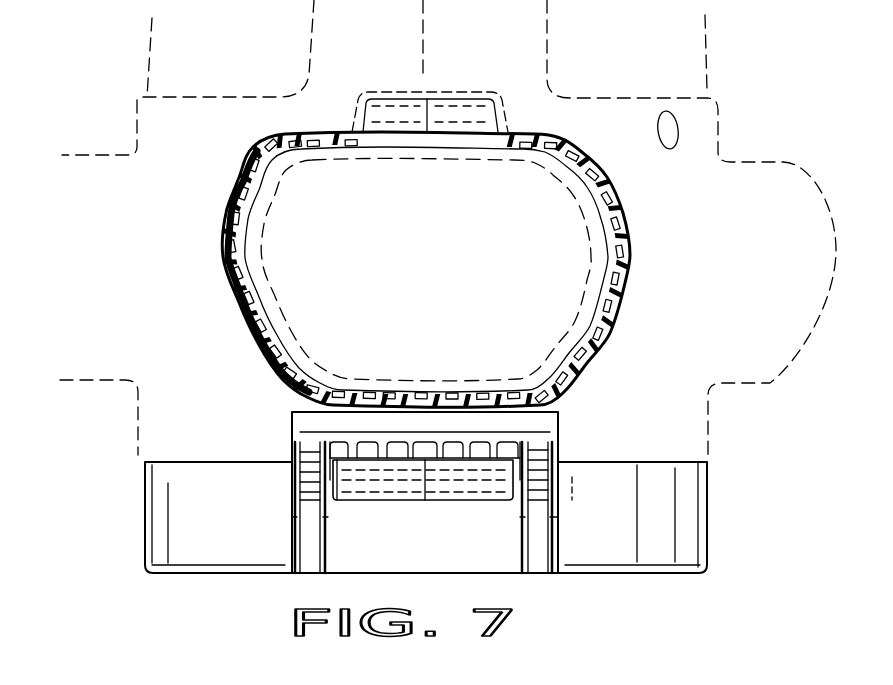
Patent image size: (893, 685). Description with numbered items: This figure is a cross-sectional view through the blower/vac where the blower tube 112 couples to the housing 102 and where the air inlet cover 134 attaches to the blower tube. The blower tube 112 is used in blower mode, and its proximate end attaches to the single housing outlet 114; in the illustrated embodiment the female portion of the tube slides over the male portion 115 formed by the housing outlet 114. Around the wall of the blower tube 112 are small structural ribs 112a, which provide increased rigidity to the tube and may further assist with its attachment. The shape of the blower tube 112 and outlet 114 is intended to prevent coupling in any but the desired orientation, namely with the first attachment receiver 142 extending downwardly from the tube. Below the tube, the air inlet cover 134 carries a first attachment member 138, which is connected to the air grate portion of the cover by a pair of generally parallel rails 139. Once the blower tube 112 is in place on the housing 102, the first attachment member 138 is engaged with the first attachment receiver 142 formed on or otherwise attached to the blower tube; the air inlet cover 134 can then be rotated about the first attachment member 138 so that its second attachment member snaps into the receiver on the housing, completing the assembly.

The housing 102 is at (767, 163).
The blower tube 112 is at (288, 223).
The structural ribs 112a is at (328, 146).
The housing outlet 114 is at (442, 282).
The male portion 115 is at (592, 218).
The air inlet cover 134 is at (145, 533).
The first attachment member 138 is at (350, 453).
The rails 139 is at (290, 552).
The first attachment receiver 142 is at (418, 500).